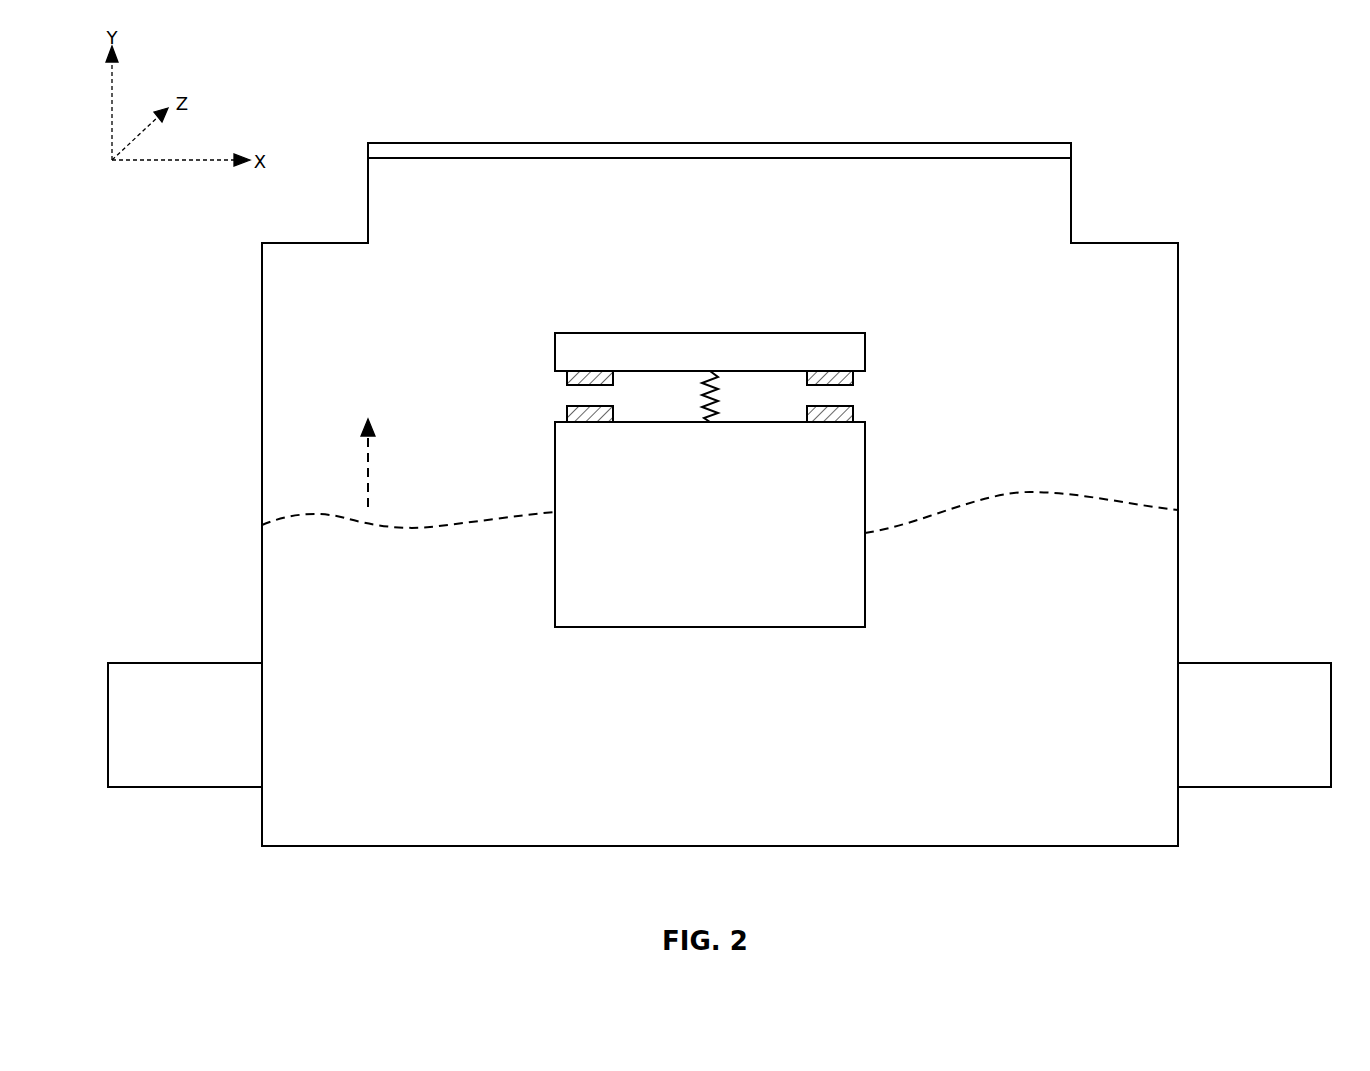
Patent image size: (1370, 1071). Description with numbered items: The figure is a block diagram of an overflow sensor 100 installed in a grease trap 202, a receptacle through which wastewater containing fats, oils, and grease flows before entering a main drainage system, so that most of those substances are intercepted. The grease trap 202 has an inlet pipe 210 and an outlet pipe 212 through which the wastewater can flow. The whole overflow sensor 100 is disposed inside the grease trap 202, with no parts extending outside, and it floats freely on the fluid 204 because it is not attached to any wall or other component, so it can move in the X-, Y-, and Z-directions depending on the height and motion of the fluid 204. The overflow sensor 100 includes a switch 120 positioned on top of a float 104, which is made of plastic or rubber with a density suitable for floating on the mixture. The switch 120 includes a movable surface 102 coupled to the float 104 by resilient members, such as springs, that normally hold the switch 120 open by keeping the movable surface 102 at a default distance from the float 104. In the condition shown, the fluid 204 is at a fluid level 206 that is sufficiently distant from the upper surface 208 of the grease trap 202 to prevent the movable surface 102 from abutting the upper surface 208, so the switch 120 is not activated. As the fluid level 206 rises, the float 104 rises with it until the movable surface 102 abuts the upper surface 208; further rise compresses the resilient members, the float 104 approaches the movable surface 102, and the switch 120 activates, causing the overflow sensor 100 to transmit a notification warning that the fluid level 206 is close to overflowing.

The overflow sensor 100 is at (645, 293).
The movable surface 102 is at (710, 352).
The float 104 is at (710, 524).
The switch 120 is at (887, 334).
The grease trap 202 is at (1178, 352).
The fluid 204 is at (720, 754).
The fluid level 206 is at (1133, 498).
The upper surface 208 is at (1040, 143).
The inlet pipe 210 is at (184, 663).
The outlet pipe 212 is at (1245, 663).